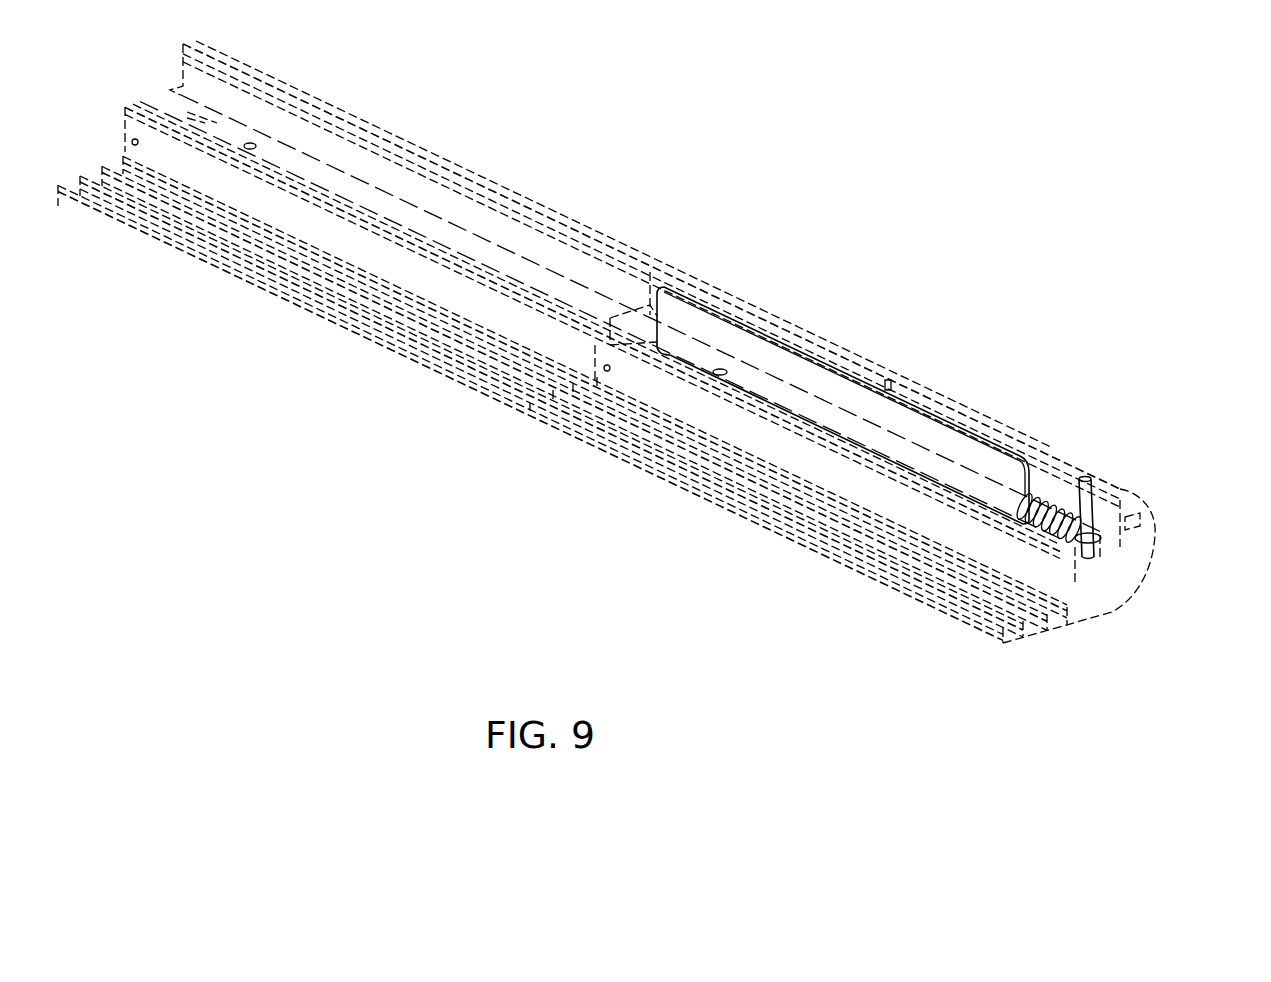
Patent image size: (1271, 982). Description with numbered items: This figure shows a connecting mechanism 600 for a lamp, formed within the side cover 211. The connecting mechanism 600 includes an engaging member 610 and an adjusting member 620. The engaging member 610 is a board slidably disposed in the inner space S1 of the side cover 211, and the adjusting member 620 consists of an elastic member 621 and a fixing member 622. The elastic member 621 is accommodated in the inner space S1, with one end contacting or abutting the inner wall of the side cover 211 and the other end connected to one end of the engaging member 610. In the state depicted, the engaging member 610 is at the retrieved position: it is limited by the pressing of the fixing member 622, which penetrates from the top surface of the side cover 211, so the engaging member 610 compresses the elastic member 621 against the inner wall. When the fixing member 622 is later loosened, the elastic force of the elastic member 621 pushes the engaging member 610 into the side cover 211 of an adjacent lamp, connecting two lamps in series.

The side cover 211 is at (503, 192).
The connecting mechanism 600 is at (879, 361).
The engaging member 610 is at (765, 345).
The adjusting member 620 is at (980, 392).
The elastic member 621 is at (1048, 492).
The fixing member 622 is at (888, 342).
The inner space S1 is at (1146, 564).